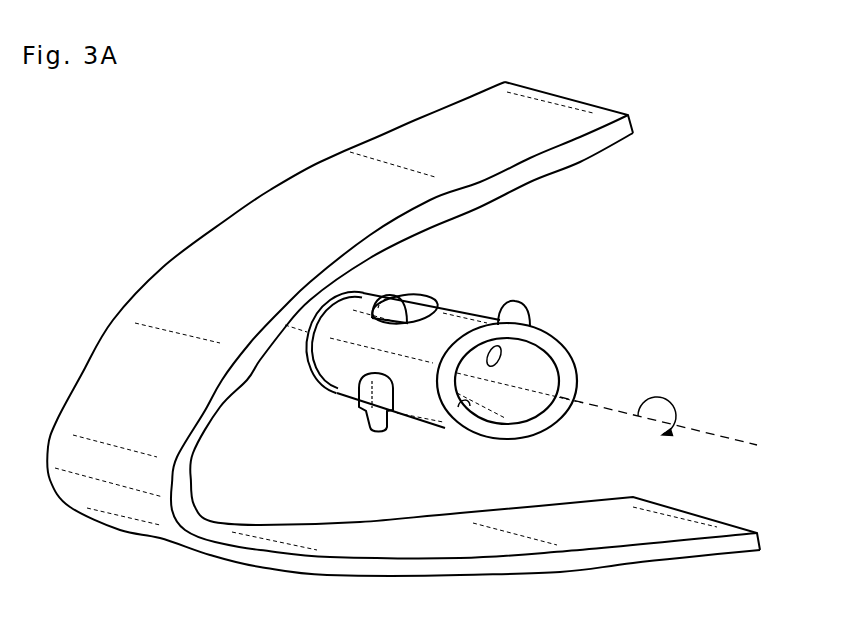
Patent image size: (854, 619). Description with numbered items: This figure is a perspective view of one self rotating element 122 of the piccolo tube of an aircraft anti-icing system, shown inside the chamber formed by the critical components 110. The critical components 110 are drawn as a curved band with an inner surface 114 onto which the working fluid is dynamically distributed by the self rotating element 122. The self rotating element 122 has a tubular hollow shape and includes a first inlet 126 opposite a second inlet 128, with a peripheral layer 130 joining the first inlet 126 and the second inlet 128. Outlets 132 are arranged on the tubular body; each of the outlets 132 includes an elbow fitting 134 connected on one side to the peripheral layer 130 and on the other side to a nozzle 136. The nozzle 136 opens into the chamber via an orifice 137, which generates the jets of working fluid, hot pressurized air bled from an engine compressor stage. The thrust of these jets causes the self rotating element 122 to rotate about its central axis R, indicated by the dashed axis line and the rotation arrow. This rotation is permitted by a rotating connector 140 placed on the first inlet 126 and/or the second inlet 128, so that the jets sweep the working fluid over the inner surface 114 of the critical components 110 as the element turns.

The critical components 110 is at (117, 513).
The inner surface 114 is at (248, 532).
The self rotating element 122 is at (450, 354).
The first inlet 126 is at (543, 343).
The second inlet 128 is at (308, 359).
The peripheral layer 130 is at (338, 395).
The outlets 132 is at (440, 328).
The elbow fitting 134 is at (415, 301).
The nozzle 136 is at (388, 296).
The orifice 137 is at (375, 314).
The rotating connector 140 is at (576, 377).
The central axis R is at (708, 431).